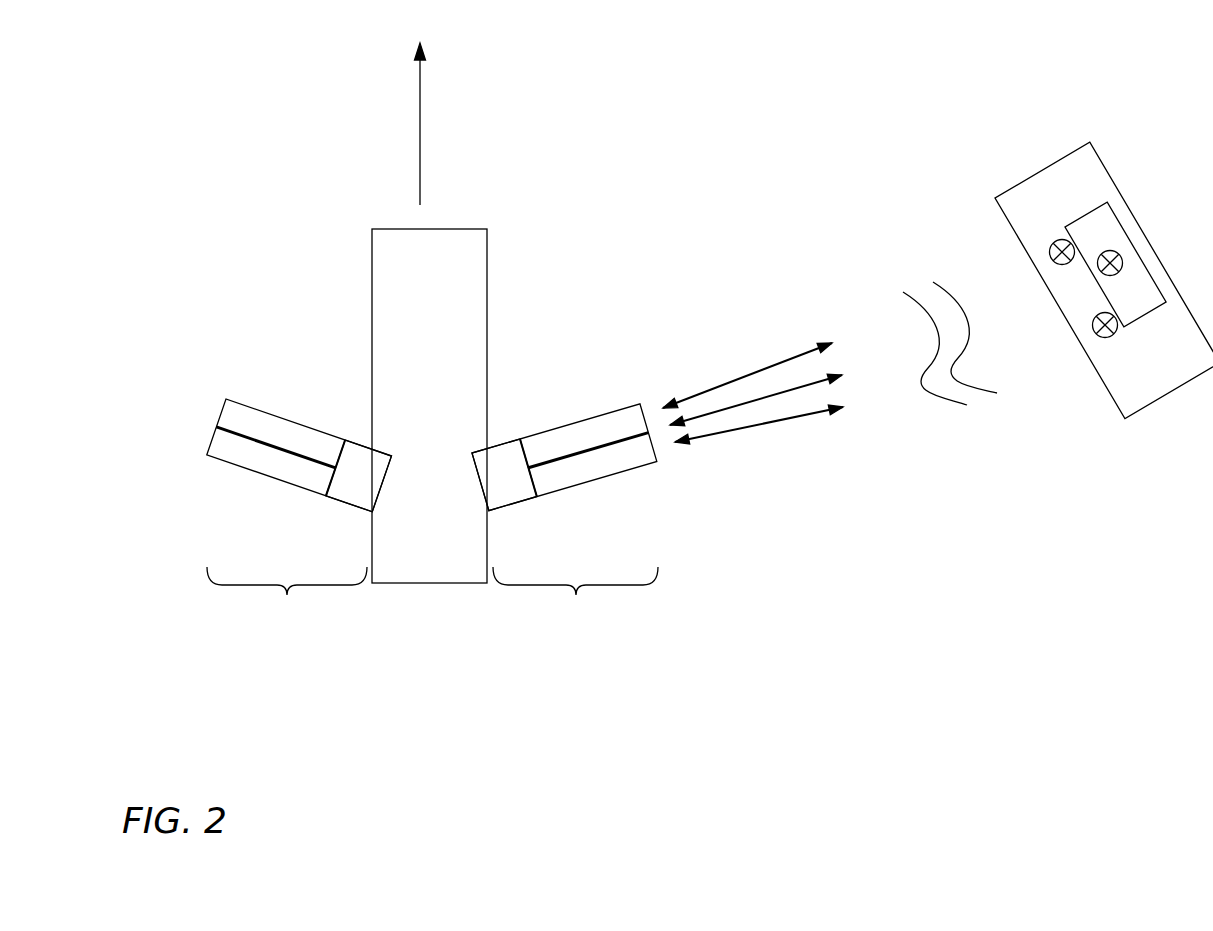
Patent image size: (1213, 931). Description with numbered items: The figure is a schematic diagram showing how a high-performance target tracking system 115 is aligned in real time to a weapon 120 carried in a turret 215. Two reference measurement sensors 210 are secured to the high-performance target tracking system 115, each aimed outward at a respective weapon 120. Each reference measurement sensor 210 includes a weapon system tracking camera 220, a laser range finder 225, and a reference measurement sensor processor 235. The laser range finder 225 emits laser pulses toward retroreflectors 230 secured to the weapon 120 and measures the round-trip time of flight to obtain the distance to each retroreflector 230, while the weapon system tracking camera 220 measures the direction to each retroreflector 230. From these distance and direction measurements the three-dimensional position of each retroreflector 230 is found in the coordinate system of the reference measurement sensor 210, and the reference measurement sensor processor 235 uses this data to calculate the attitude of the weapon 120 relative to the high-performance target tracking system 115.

The high-performance target tracking system 115 is at (470, 229).
The reference measurement sensor 210 is at (432, 489).
The weapon system tracking camera 220 is at (280, 415).
The laser range finder 225 is at (255, 473).
The reference measurement sensor processor 235 is at (347, 503).
The turret 215 is at (1110, 403).
The weapon 120 is at (1125, 217).
The retroreflector 230 is at (1057, 242).